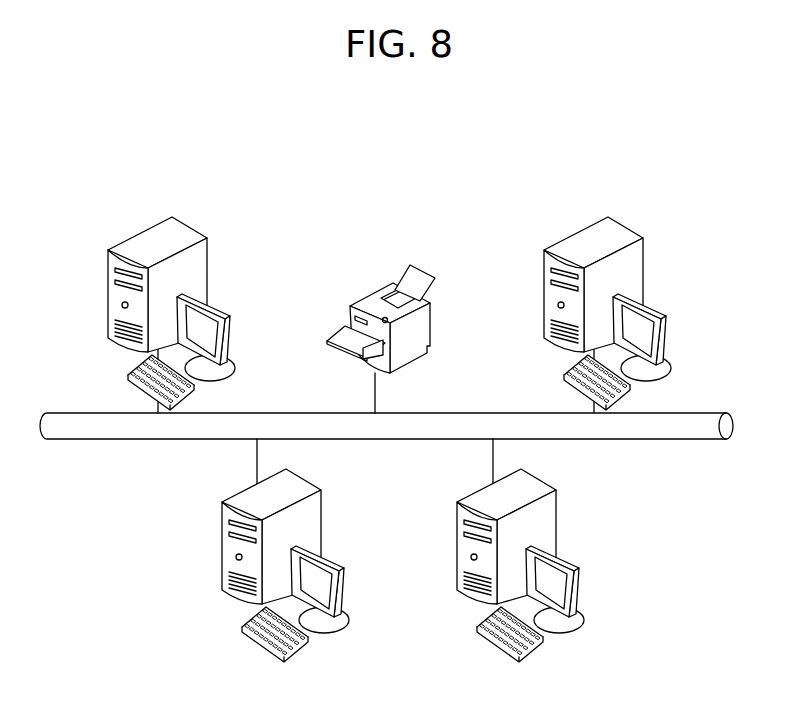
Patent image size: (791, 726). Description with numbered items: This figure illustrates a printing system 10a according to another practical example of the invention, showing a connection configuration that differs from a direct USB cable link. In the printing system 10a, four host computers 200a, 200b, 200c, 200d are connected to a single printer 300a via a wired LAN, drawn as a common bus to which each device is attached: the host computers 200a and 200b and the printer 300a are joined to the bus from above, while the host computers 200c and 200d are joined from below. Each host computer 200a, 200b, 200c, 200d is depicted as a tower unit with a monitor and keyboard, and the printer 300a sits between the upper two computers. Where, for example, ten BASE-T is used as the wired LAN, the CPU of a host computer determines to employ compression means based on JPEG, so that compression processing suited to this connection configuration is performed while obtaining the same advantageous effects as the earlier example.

The printing system 10a is at (482, 142).
The host computer 200a is at (150, 222).
The host computer 200b is at (586, 223).
The host computer 200c is at (220, 552).
The host computer 200d is at (556, 542).
The printer 300a is at (375, 287).